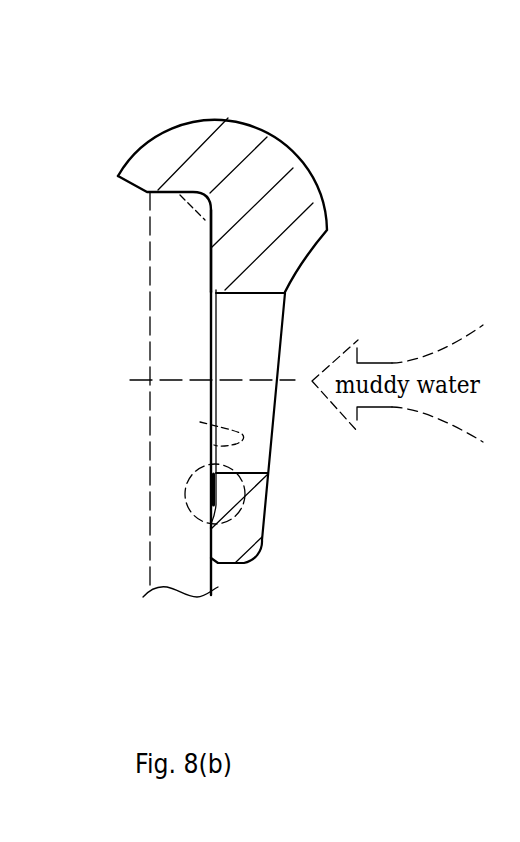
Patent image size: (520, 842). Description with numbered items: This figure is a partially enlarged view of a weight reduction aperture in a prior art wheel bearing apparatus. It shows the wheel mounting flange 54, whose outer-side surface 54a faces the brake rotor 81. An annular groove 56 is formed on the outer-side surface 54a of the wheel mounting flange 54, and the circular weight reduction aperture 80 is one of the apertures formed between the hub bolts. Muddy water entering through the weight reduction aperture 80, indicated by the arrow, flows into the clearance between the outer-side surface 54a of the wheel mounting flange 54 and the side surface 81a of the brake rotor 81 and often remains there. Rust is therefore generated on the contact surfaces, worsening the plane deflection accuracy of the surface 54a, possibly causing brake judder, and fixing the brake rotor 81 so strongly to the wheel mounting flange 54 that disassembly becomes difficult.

The wheel mounting flange 54 is at (309, 184).
The outer-side surface 54a is at (210, 252).
The annular groove 56 is at (210, 335).
The weight reduction aperture 80 is at (256, 294).
The brake rotor 81 is at (183, 460).
The side surface 81a is at (200, 422).